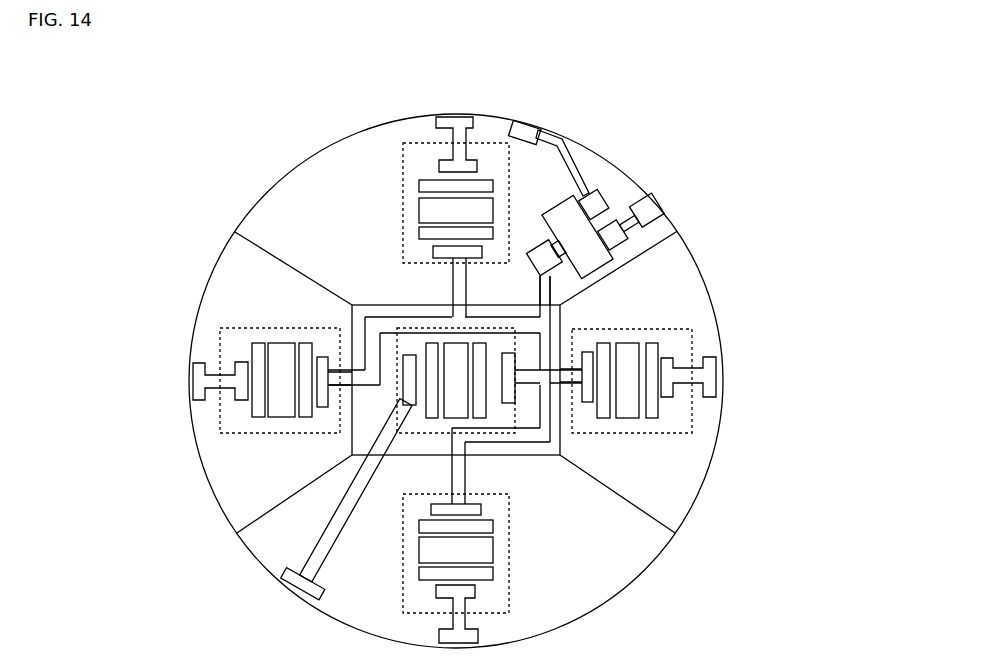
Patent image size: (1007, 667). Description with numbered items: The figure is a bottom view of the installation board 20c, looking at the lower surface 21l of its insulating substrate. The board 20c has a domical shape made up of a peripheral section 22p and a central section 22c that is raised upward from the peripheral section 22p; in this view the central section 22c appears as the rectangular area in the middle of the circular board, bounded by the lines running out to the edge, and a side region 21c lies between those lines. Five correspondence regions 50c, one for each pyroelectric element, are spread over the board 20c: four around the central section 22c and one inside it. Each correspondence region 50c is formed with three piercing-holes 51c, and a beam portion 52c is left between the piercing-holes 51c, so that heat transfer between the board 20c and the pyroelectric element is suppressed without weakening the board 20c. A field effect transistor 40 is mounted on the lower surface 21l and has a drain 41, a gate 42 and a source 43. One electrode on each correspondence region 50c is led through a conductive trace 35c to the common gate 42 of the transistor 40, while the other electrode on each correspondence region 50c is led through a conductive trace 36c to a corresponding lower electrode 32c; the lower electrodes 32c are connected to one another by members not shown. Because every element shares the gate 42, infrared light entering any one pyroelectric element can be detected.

The installation board 20c is at (733, 132).
The lower surface 21l is at (300, 190).
The side substrate region 21c is at (713, 337).
The central section 22c is at (494, 318).
The peripheral section 22p is at (688, 482).
The lower electrode 32c is at (449, 117).
The conductive trace 35c is at (346, 373).
The conductive trace 36c is at (452, 137).
The field effect transistor 40 is at (600, 258).
The drain 41 is at (590, 203).
The gate 42 is at (545, 276).
The source 43 is at (615, 237).
The correspondence region 50c is at (488, 143).
The piercing-hole 51c is at (306, 343).
The beam portion 52c is at (297, 410).